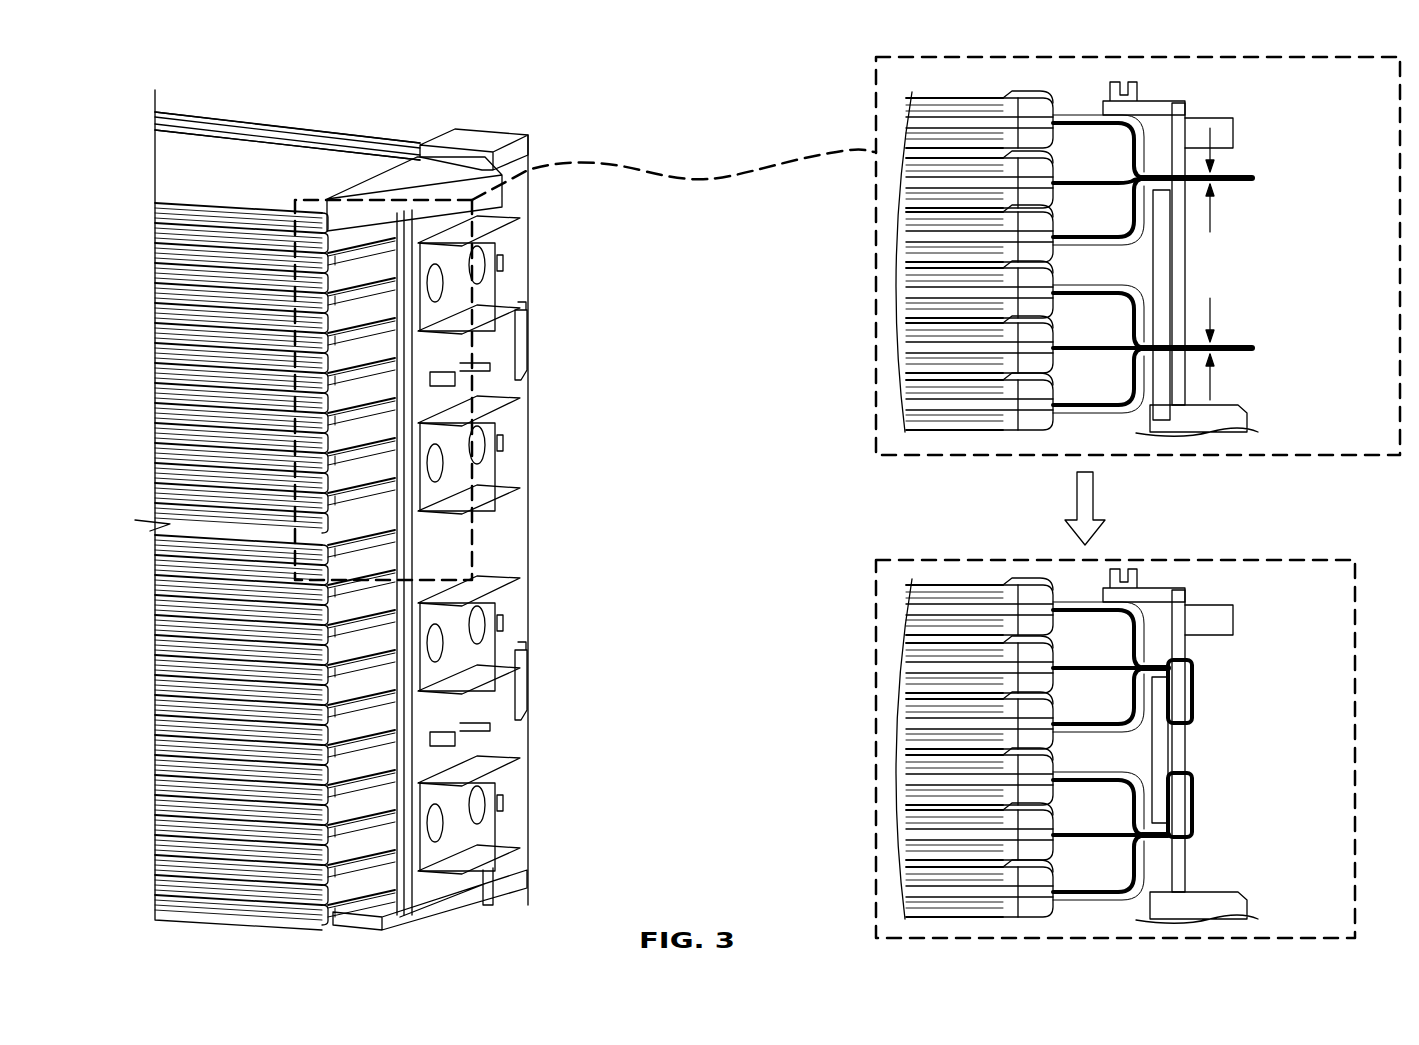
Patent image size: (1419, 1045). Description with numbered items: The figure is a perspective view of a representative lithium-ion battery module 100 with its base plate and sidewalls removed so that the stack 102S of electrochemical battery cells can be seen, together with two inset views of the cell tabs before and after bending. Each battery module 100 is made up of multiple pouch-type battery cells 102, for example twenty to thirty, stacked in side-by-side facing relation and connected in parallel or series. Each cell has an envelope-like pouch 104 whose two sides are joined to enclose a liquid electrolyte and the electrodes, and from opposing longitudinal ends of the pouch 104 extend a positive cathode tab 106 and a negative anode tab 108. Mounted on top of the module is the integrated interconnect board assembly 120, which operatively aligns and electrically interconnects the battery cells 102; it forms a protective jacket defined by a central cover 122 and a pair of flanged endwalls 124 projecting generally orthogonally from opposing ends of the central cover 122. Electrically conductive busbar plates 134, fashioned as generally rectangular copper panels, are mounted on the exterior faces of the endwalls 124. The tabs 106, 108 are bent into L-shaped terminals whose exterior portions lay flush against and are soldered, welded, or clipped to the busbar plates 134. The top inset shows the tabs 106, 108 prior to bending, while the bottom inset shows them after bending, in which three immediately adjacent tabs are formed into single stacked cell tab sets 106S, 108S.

The battery module 100 is at (622, 79).
The battery pouch cell 102 is at (910, 120).
The stack of electrochemical battery cells 102S is at (205, 126).
The pouch 104 is at (360, 152).
The positive (cathode) electrical tab 106 is at (1232, 170).
The stacked cathode tab set 106S is at (505, 232).
The negative (anode) electrical tab 108 is at (1232, 340).
The stacked anode tab set 108S is at (505, 318).
The integrated interconnect board (ICB) assembly 120 is at (433, 123).
The central cover 122 is at (270, 128).
The flanged endwall 124 is at (497, 130).
The busbar plate 134 is at (480, 297).